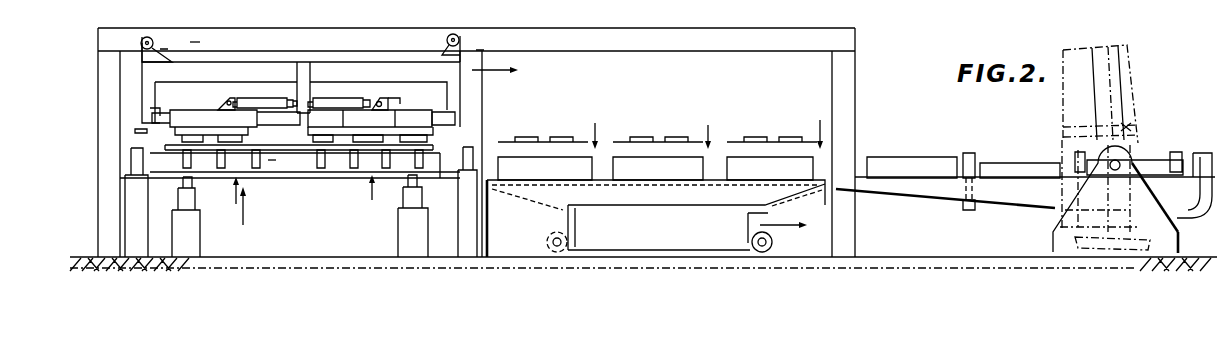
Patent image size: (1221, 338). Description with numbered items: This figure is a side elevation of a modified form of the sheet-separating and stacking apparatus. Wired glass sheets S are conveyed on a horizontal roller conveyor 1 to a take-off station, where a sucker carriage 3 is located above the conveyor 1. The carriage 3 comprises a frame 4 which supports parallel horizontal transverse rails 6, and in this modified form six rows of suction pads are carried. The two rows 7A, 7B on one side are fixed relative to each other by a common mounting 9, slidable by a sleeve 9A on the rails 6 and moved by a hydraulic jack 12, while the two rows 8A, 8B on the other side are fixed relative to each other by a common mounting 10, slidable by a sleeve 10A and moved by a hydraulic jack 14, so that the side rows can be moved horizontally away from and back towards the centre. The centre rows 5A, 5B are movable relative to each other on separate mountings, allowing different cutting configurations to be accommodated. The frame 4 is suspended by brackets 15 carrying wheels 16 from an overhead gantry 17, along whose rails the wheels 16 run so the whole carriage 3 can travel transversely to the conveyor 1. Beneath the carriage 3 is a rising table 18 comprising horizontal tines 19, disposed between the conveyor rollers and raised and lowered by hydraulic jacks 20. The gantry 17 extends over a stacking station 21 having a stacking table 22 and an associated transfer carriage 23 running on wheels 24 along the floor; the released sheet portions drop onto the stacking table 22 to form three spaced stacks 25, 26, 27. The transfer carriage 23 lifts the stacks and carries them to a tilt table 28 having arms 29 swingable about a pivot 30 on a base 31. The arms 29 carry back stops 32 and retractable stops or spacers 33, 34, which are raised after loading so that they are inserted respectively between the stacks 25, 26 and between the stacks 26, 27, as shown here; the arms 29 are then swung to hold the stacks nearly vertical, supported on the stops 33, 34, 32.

The horizontal roller conveyor 1 is at (160, 174).
The sucker carriage 3 is at (348, 59).
The frame 4 is at (363, 70).
The centre row of suction pads 5A is at (290, 153).
The centre row of suction pads 5B is at (327, 153).
The transverse rails 6 is at (156, 111).
The row of suction pads 7A is at (202, 178).
The row of suction pads 7B is at (254, 180).
The row of suction pads 8A is at (455, 101).
The row of suction pads 8B is at (460, 134).
The mounting 9 is at (242, 115).
The sleeve 9A is at (192, 110).
The mounting 10 is at (370, 131).
The sleeve 10A is at (404, 99).
The hydraulic jack 12 is at (267, 100).
The hydraulic jack 14 is at (327, 99).
The brackets 15 is at (160, 49).
The wheels 16 is at (141, 43).
The overhead gantry 17 is at (196, 42).
The rising table 18 is at (238, 215).
The tines 19 is at (388, 174).
The hydraulic jacks 20 is at (190, 234).
The stacking station 21 is at (715, 27).
The stacking table 22 is at (823, 172).
The transfer carriage 23 is at (677, 232).
The wheels 24 is at (547, 238).
The stack 25 is at (573, 168).
The stack 26 is at (673, 168).
The stack 27 is at (767, 165).
The tilt table 28 is at (1063, 260).
The arms 29 is at (910, 197).
The pivot 30 is at (1133, 156).
The base 31 is at (1179, 233).
The back stops 32 is at (1015, 233).
The retractable stop 33 is at (967, 153).
The retractable stop 34 is at (1070, 156).
The wired glass sheet S is at (160, 142).